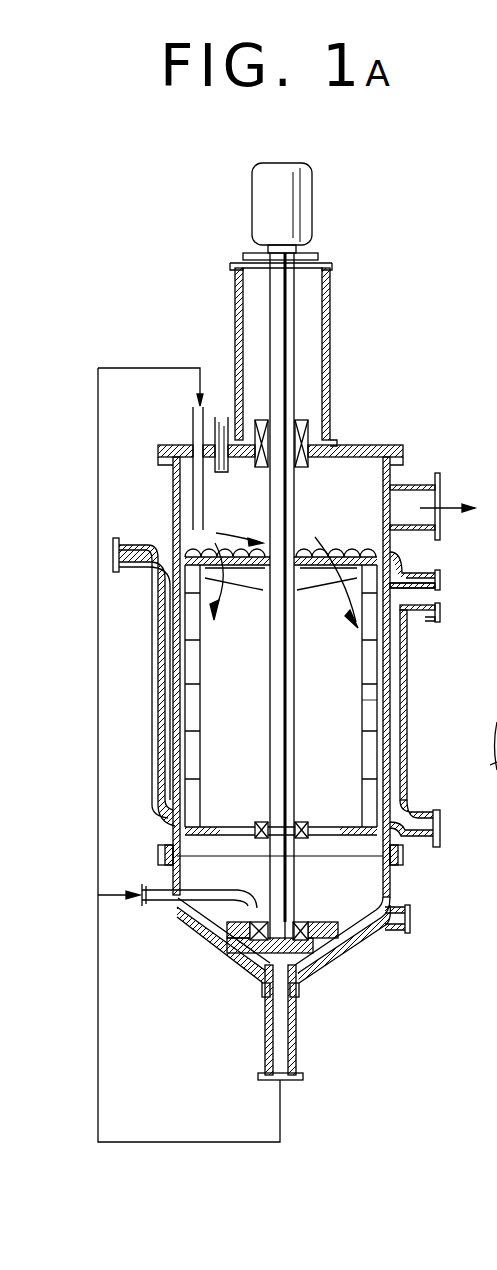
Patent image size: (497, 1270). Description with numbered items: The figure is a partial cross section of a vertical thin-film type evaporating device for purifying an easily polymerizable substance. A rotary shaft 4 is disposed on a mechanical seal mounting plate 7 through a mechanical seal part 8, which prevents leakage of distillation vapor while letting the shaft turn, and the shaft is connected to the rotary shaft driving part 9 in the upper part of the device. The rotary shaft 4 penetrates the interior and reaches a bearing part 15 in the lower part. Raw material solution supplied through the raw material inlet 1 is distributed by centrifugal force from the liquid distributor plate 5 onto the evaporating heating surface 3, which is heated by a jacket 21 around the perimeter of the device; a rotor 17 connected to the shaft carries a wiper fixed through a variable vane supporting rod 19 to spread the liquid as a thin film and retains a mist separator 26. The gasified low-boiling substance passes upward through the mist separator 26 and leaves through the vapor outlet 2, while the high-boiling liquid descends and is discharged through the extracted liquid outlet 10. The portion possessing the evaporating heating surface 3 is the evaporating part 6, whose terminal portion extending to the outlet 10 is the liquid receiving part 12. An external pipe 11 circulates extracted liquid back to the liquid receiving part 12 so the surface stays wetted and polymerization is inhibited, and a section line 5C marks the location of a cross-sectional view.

The raw material inlet 1 is at (192, 418).
The vapor outlet 2 is at (421, 486).
The evaporating heating surface 3 is at (383, 699).
The rotary shaft 4 is at (286, 708).
The liquid distributor plate 5 is at (243, 576).
The section line 5C is at (122, 668).
The evaporating part 6 is at (82, 457).
The mechanical seal mounting plate 7 is at (392, 446).
The mechanical seal part 8 is at (306, 424).
The rotary shaft driving part 9 is at (82, 168).
The extracted liquid outlet 10 is at (278, 1048).
The external pipe 11 is at (155, 905).
The liquid receiving part 12 is at (440, 848).
The bearing part 15 is at (306, 938).
The rotor 17 is at (192, 748).
The variable vane supporting rod 19 is at (220, 416).
The jacket 21 is at (165, 721).
The mist separator 26 is at (370, 718).